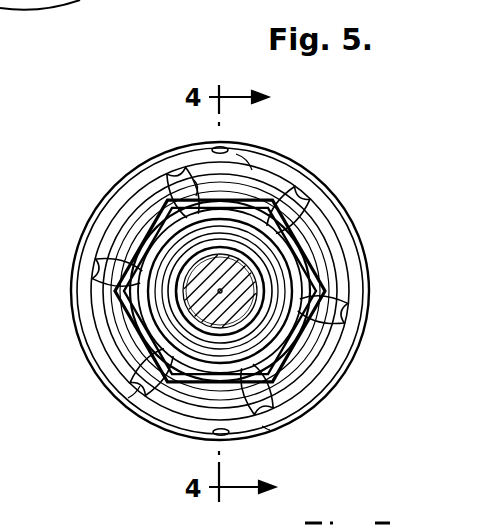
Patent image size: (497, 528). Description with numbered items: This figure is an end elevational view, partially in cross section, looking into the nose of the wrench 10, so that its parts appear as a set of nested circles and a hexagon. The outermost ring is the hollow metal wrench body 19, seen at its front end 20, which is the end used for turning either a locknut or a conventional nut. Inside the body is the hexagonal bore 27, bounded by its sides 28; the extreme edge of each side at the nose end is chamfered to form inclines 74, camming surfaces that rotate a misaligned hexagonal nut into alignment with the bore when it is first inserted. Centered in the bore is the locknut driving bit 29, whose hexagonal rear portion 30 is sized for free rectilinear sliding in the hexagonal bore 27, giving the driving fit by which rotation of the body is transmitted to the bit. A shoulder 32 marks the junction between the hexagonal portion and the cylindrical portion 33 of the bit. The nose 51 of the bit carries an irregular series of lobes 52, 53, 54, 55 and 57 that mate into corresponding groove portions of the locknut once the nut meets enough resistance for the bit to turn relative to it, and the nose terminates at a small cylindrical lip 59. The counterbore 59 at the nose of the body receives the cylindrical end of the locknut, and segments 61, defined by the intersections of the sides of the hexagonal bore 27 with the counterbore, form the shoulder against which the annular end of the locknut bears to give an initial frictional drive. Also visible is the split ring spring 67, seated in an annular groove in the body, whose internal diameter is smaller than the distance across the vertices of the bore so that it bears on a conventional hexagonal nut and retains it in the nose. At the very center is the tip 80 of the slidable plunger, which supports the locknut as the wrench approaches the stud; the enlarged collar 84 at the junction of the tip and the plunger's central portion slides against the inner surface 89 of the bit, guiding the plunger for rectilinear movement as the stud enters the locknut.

The wrench 10 is at (352, 156).
The wrench body 19 is at (126, 196).
The front end 20 is at (120, 218).
The hexagonal bore 27 is at (356, 272).
The sides 28 is at (112, 202).
The locknut driving bit 29 is at (342, 362).
The hexagonal rear portion 30 is at (338, 208).
The shoulder 32 is at (288, 182).
The cylindrical portion 33 is at (104, 352).
The nose 51 is at (250, 162).
The lobe 52 is at (196, 172).
The lobe 53 is at (176, 430).
The lobe 54 is at (128, 398).
The lobe 55 is at (100, 264).
The lobe 57 is at (340, 310).
The counterbore 59 is at (348, 228).
The segments 61 is at (342, 344).
The split ring spring 67 is at (194, 180).
The inclines 74 is at (152, 208).
The tip 80 is at (234, 318).
The enlarged collar 84 is at (270, 430).
The inner surface 89 is at (220, 291).